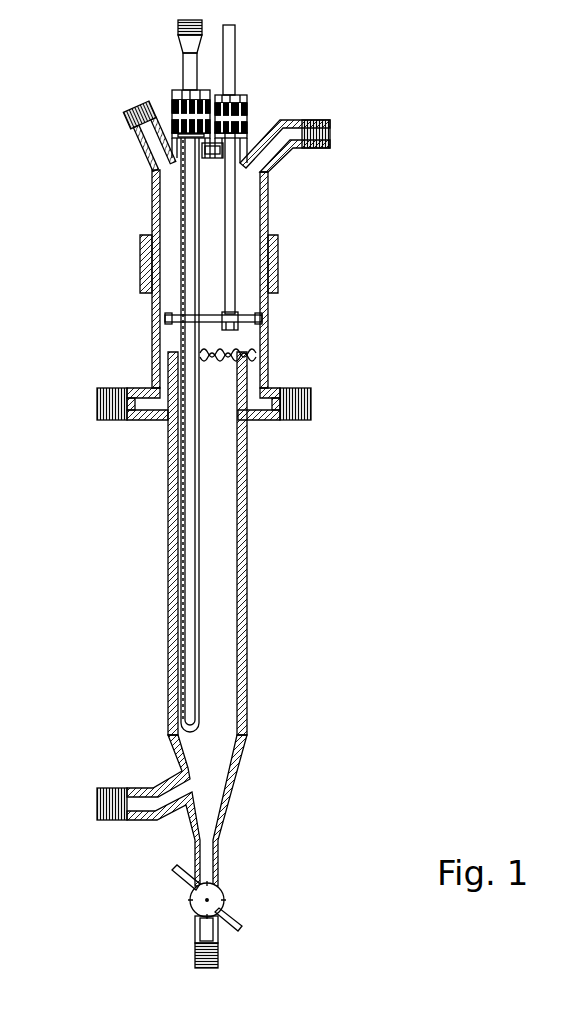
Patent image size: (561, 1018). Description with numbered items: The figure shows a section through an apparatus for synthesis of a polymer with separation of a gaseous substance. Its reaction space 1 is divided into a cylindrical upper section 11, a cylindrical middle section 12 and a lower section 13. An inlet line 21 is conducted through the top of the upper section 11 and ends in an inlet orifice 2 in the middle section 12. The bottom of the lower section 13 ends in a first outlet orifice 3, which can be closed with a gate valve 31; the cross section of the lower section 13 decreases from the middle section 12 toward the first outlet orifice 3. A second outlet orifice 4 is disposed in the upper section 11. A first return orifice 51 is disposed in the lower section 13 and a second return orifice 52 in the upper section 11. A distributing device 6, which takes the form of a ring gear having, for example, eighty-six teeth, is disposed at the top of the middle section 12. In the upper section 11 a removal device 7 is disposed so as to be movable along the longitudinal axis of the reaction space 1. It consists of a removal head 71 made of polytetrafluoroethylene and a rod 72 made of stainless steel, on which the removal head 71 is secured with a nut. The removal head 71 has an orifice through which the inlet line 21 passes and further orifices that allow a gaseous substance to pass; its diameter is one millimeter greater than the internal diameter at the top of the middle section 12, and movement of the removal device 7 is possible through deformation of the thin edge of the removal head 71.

The reaction space 1 is at (280, 540).
The cylindrical upper section 11 is at (170, 208).
The cylindrical middle section 12 is at (223, 513).
The lower section 13 is at (222, 810).
The inlet orifice 2 is at (173, 743).
The inlet line 21 is at (193, 273).
The first outlet orifice 3 is at (218, 868).
The gate valve 31 is at (209, 899).
The second outlet orifice 4 is at (257, 162).
The first return orifice 51 is at (93, 802).
The second return orifice 52 is at (97, 405).
The distributing device 6 is at (238, 362).
The removal device 7 is at (237, 262).
The removal head 71 is at (262, 317).
The rod 72 is at (225, 210).